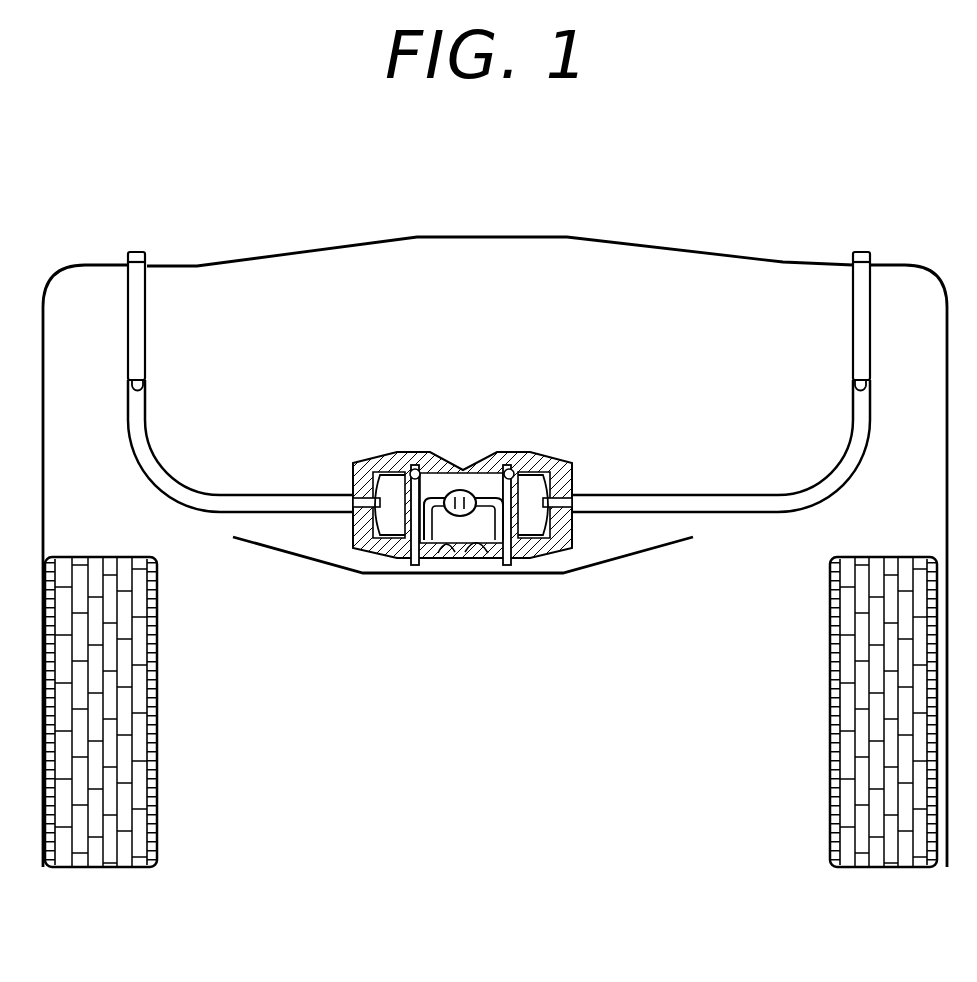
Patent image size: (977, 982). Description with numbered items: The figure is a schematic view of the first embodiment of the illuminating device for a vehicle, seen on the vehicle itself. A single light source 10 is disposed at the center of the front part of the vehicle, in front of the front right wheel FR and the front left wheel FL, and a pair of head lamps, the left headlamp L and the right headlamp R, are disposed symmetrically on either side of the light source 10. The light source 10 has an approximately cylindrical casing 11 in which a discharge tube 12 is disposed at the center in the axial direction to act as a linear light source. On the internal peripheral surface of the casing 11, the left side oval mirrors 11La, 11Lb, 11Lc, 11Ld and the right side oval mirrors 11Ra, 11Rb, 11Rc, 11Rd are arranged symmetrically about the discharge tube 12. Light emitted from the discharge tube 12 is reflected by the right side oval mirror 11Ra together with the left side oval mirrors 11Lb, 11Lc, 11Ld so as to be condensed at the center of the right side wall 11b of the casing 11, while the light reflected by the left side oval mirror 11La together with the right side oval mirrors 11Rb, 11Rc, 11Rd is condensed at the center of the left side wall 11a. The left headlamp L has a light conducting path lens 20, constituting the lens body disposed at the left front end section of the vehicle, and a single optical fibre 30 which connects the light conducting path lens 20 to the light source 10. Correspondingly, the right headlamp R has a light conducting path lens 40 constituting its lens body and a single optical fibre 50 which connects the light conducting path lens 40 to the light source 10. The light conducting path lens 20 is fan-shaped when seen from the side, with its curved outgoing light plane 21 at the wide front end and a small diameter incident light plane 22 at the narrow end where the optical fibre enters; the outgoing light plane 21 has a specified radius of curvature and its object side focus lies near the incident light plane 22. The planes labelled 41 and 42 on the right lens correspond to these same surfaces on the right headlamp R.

The light source 10 is at (536, 426).
The casing 11 is at (451, 457).
The left side wall 11a is at (347, 533).
The right side wall 11b is at (578, 525).
The left side oval mirror 11La is at (437, 553).
The left side oval mirror 11Lb is at (440, 455).
The left side oval mirror 11Lc is at (428, 456).
The left side oval mirror 11Ld is at (353, 469).
The right side oval mirror 11Ra is at (485, 558).
The right side oval mirror 11Rb is at (487, 457).
The right side oval mirror 11Rc is at (530, 457).
The right side oval mirror 11Rd is at (572, 469).
The discharge tube 12 is at (460, 527).
The light conducting path lens 20 is at (137, 352).
The outgoing light plane 21 is at (138, 252).
The incident light plane 22 is at (146, 393).
The optical fibre 30 is at (172, 463).
The light conducting path lens 40 is at (862, 352).
The right lever pivot 41 is at (862, 252).
The right lever joint 42 is at (853, 393).
The optical fibre 50 is at (837, 463).
The left headlamp L is at (229, 256).
The right headlamp R is at (782, 255).
The front left wheel FL is at (157, 712).
The front right wheel FR is at (830, 712).